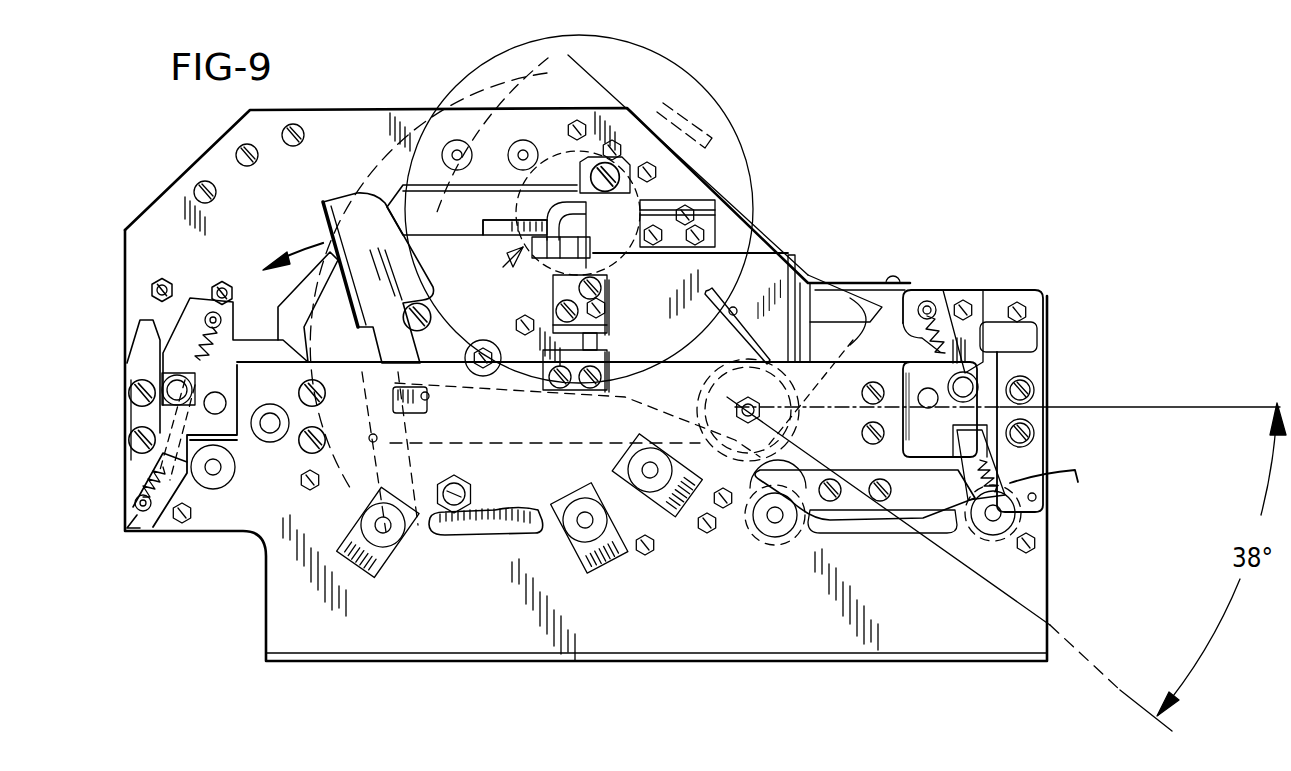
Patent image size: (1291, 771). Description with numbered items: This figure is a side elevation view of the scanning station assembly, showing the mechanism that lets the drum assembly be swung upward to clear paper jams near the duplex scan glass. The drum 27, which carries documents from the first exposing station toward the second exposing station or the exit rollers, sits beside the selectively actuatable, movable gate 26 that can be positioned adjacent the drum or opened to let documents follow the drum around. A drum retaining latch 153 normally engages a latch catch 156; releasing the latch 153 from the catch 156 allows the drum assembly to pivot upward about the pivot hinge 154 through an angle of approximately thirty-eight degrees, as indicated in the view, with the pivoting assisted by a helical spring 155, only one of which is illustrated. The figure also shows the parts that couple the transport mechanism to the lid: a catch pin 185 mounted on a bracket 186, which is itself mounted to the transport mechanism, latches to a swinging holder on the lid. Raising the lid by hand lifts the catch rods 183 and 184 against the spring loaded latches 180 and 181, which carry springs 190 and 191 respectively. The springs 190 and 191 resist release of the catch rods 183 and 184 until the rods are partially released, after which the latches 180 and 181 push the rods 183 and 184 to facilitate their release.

The gate 26 is at (273, 332).
The drum 27 is at (263, 280).
The drum retaining latch 153 is at (313, 203).
The pivot hinge 154 is at (763, 417).
The helical spring 155 is at (748, 338).
The latch catch 156 is at (432, 300).
The spring loaded latch 180 is at (186, 316).
The spring loaded latch 181 is at (983, 326).
The catch rod 183 is at (128, 350).
The catch rod 184 is at (978, 358).
The catch pin 185 is at (545, 208).
The bracket 186 is at (707, 180).
The spring 190 is at (128, 475).
The spring 191 is at (1020, 462).